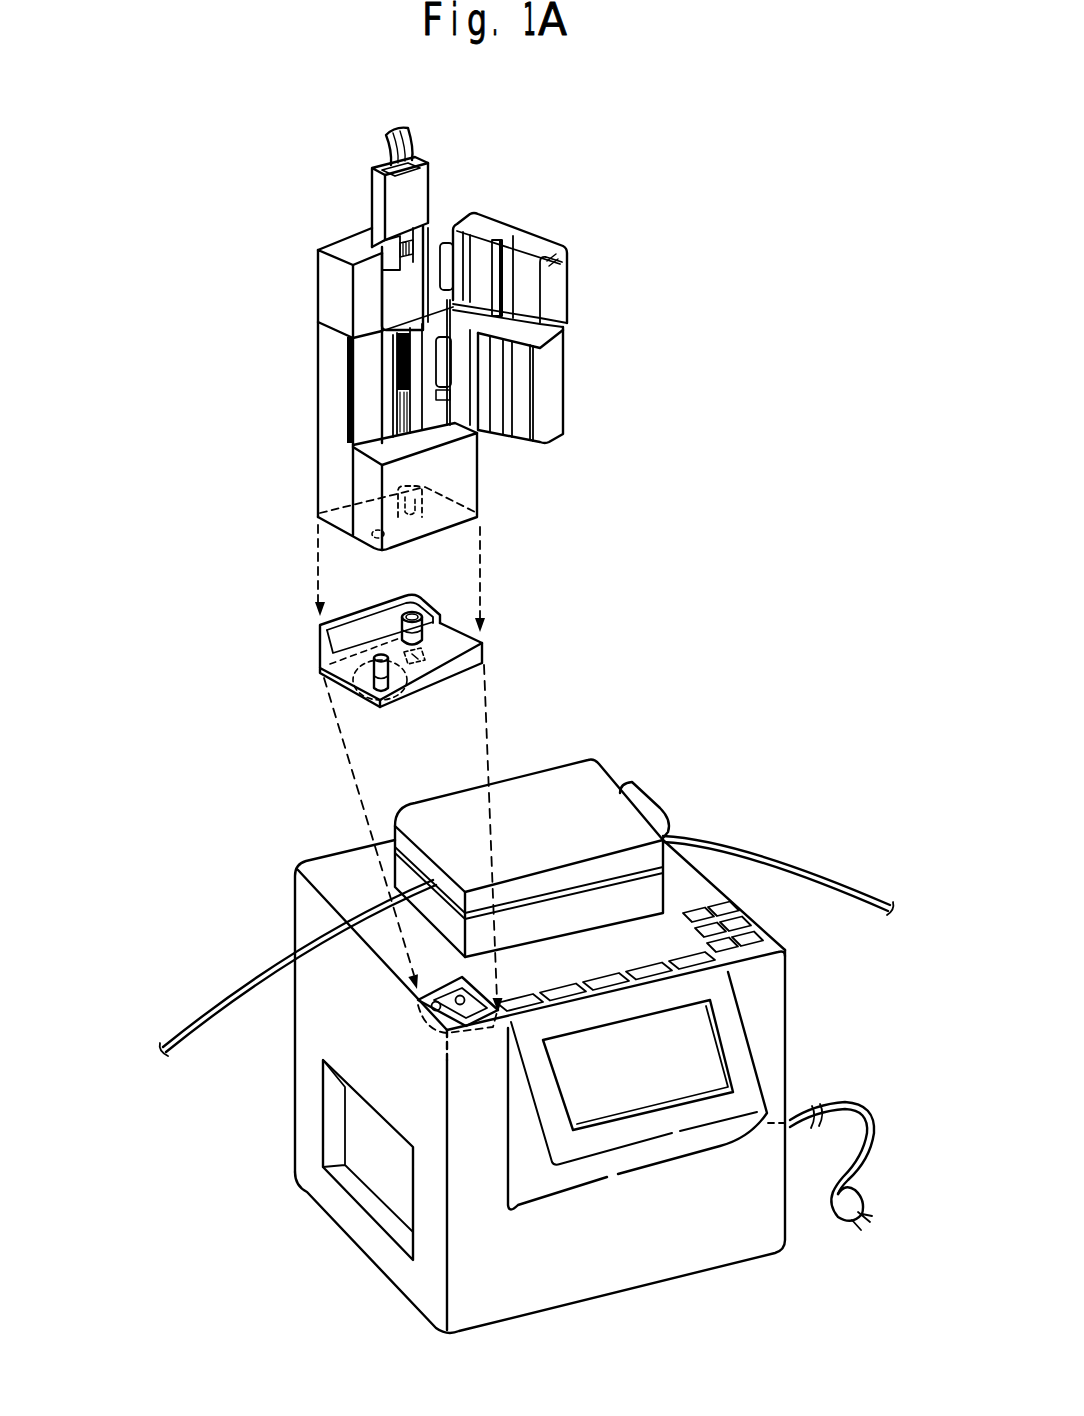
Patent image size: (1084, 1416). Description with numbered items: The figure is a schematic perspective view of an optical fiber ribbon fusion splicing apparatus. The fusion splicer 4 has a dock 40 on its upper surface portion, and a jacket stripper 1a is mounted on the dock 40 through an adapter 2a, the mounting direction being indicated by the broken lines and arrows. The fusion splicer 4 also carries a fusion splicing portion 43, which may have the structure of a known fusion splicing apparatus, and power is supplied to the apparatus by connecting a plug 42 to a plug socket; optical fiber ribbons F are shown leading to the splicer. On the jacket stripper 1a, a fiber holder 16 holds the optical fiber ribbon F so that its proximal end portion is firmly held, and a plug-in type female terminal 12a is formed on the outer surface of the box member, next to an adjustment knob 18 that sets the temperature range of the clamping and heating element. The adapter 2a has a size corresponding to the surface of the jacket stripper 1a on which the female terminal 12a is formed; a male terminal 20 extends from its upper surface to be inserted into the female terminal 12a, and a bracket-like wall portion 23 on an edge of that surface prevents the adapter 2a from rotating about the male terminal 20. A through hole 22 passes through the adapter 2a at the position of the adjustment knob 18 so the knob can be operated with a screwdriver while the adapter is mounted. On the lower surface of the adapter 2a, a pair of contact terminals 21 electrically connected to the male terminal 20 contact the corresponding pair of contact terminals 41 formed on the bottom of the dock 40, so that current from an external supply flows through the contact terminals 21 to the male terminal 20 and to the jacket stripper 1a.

The jacket stripper 1a is at (266, 300).
The female terminal 12a is at (423, 517).
The fiber holder 16 is at (374, 191).
The adjustment knob 18 is at (316, 555).
The adapter 2a is at (491, 627).
The male terminal 20 is at (427, 630).
The contact terminals 21 is at (368, 702).
The through hole 22 is at (378, 656).
The wall portion 23 is at (385, 612).
The fusion splicer 4 is at (698, 733).
The dock 40 is at (434, 1028).
The contact terminals 41 is at (418, 998).
The plug 42 is at (832, 1213).
The fusion splicing portion 43 is at (594, 758).
The optical fiber ribbon F is at (406, 129).